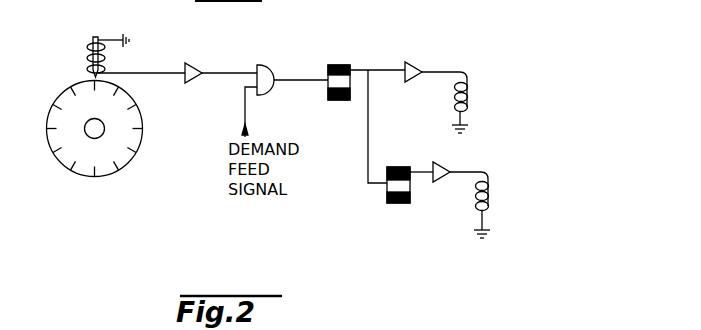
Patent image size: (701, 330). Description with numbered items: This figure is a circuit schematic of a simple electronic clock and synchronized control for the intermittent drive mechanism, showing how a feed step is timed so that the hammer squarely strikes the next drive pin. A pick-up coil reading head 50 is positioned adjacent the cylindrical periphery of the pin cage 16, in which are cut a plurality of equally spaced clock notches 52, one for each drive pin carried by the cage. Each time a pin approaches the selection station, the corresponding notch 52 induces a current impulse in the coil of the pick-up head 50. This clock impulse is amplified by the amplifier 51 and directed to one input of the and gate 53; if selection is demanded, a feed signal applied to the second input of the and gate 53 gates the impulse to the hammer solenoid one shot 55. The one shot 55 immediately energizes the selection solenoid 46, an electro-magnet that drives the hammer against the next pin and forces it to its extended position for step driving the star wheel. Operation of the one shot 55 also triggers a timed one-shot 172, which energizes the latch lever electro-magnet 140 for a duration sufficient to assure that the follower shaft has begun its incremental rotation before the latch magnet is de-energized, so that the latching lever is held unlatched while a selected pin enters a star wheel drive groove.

The pin cage 16 is at (72, 158).
The clock notches 52 is at (87, 82).
The pick-up coil reading head 50 is at (92, 58).
The amplifier 51 is at (205, 46).
The and gate 53 is at (265, 65).
The hammer solenoid one shot 55 is at (329, 65).
The selection solenoid 46 is at (468, 92).
The timed one-shot 172 is at (387, 195).
The latch lever electro-magnet 140 is at (490, 185).